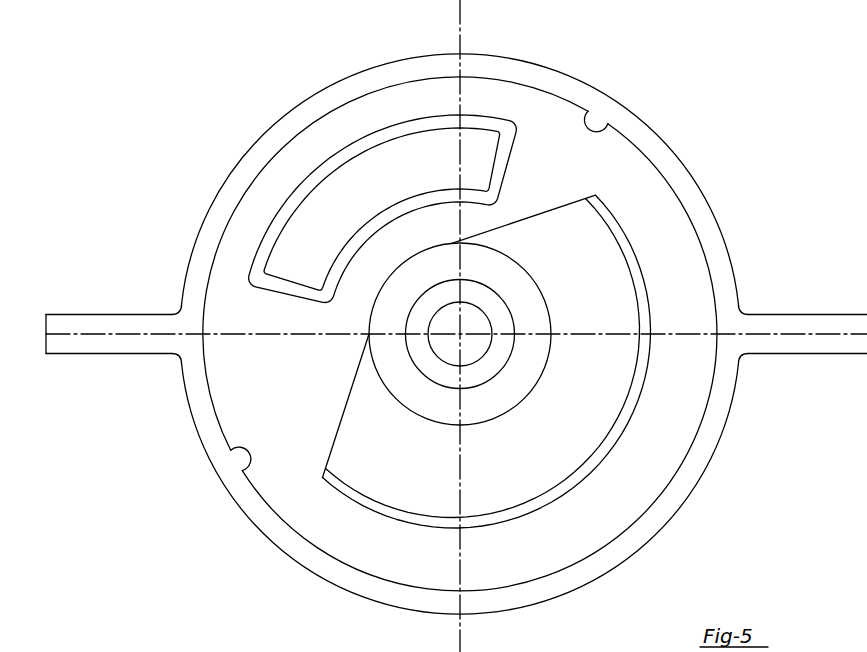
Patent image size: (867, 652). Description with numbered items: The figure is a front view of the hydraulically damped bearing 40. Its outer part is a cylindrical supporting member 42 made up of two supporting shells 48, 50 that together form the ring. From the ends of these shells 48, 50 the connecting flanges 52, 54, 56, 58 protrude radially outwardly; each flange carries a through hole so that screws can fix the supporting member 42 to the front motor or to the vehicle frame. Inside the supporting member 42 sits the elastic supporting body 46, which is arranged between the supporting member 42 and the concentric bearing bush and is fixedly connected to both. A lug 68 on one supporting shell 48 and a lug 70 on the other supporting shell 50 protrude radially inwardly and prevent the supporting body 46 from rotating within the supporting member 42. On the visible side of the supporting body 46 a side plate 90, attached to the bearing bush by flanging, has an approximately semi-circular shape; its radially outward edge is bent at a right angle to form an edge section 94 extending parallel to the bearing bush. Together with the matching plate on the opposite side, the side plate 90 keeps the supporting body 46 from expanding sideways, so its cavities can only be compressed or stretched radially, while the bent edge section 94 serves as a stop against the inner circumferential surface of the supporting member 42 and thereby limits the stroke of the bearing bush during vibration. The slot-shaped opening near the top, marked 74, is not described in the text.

The hydraulically damped bearing 40 is at (216, 106).
The cylindrical supporting member 42 is at (197, 222).
The elastic supporting body 46 is at (655, 187).
The supporting shell 48 is at (505, 62).
The supporting shell 50 is at (690, 468).
The connecting flange 52 is at (108, 322).
The connecting flange 54 is at (807, 323).
The connecting flange 56 is at (97, 343).
The connecting flange 58 is at (815, 340).
The lug 68 is at (597, 118).
The lug 70 is at (242, 456).
The arcuate slot 74 is at (373, 175).
The side plate 90 is at (388, 473).
The edge section 94 is at (530, 508).